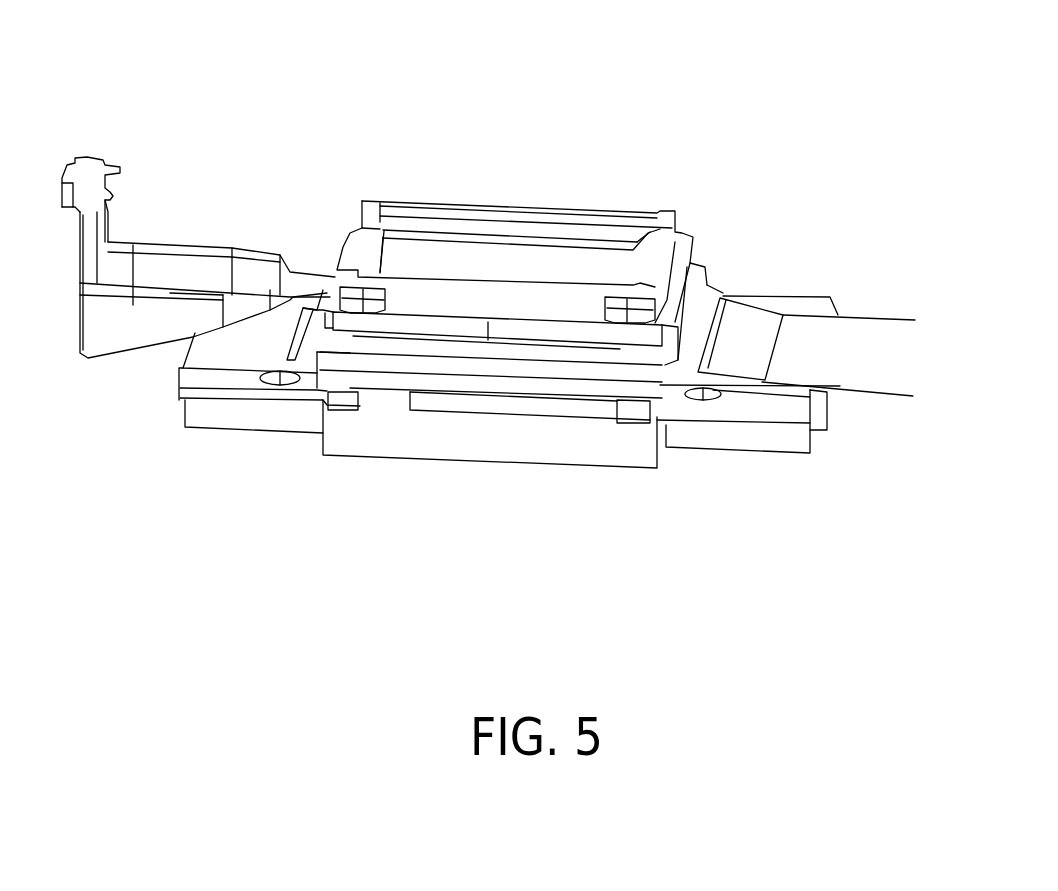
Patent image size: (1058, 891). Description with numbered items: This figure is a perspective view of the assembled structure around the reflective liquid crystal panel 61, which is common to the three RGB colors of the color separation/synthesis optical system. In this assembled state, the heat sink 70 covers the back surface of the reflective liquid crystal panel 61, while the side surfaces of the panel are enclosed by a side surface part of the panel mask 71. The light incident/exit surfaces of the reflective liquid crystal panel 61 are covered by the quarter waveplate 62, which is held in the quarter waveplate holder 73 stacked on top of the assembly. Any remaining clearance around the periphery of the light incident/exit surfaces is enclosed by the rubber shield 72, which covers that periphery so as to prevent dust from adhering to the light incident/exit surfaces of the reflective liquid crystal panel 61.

The reflective liquid crystal panel 61 is at (803, 350).
The quarter waveplate 62 is at (483, 258).
The heat sink 70 is at (237, 402).
The panel mask 71 is at (505, 400).
The rubber shield 72 is at (617, 372).
The quarter waveplate holder 73 is at (577, 212).